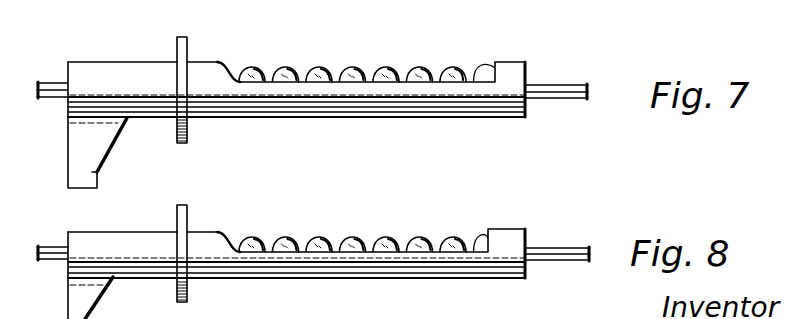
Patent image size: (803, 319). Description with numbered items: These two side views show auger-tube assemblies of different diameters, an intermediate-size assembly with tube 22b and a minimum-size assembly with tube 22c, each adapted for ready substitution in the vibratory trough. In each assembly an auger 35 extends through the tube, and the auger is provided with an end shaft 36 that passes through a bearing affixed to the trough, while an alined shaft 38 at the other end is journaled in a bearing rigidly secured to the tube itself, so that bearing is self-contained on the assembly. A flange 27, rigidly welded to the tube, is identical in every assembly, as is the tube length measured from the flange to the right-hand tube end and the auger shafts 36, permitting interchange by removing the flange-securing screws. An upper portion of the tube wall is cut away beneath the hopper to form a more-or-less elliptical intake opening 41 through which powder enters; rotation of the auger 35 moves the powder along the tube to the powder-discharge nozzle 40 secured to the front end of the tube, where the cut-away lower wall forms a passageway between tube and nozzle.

In FIG. 7, the tube 22b is at (138, 71).
In FIG. 8, the tube 22c is at (145, 241).
In FIG. 7, the flange 27 is at (187, 43).
In FIG. 8, the flange 27 is at (189, 209).
In FIG. 7, the auger 35 is at (323, 72).
In FIG. 8, the auger 35 is at (331, 241).
In FIG. 7, the end shaft 36 is at (560, 88).
In FIG. 8, the end shaft 36 is at (556, 251).
In FIG. 7, the alined shaft 38 is at (53, 88).
In FIG. 8, the alined shaft 38 is at (53, 251).
In FIG. 7, the powder-discharge nozzle 40 is at (100, 147).
In FIG. 8, the powder-discharge nozzle 40 is at (88, 296).
In FIG. 7, the intake opening 41 is at (228, 73).
In FIG. 8, the intake opening 41 is at (228, 244).